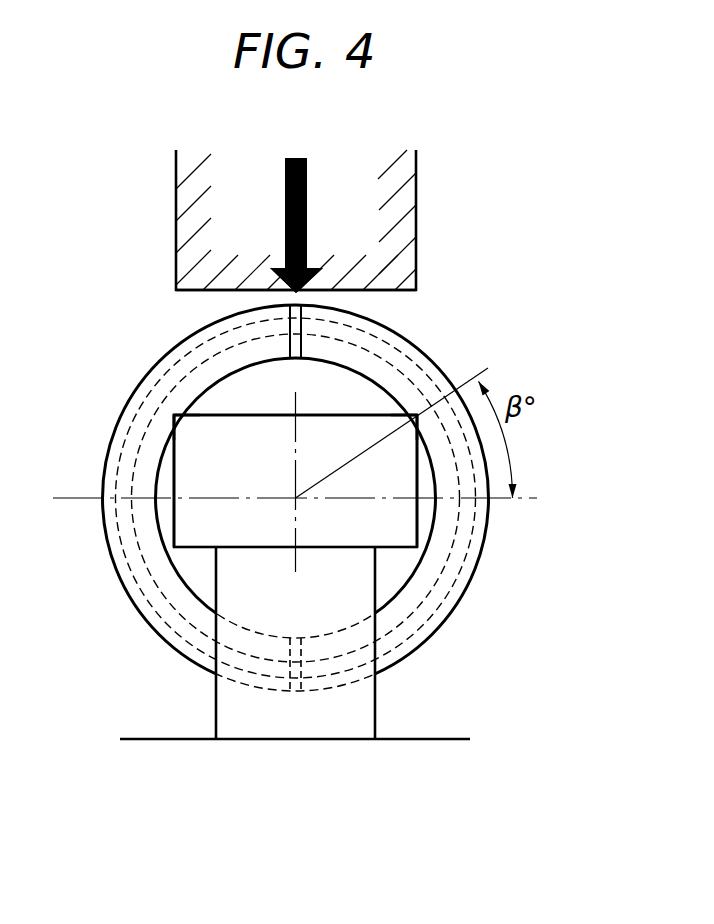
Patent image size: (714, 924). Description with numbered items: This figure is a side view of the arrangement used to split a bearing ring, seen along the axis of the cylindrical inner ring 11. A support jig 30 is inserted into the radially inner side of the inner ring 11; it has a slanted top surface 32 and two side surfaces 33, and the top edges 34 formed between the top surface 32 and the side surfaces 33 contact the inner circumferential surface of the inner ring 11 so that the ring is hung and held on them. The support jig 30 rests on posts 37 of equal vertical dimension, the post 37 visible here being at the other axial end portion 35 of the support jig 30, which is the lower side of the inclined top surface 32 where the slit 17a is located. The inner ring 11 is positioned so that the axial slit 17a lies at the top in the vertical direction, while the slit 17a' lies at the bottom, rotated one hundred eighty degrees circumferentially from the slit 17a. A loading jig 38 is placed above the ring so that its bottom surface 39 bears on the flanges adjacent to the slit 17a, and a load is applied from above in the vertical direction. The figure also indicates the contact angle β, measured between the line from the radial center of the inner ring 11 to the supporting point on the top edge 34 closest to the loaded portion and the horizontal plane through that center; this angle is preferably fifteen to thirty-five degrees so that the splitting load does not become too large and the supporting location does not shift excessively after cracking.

The inner ring 11 is at (431, 345).
The slit 17a is at (382, 308).
The slit 17a' is at (326, 712).
The support jig 30 is at (420, 485).
The top surface 32 is at (251, 414).
The side surface 33 is at (174, 463).
The top edge 34 is at (177, 420).
The other axial end portion 35 is at (233, 487).
The post 37 is at (233, 708).
The loading jig 38 is at (416, 190).
The bottom surface 39 is at (212, 292).